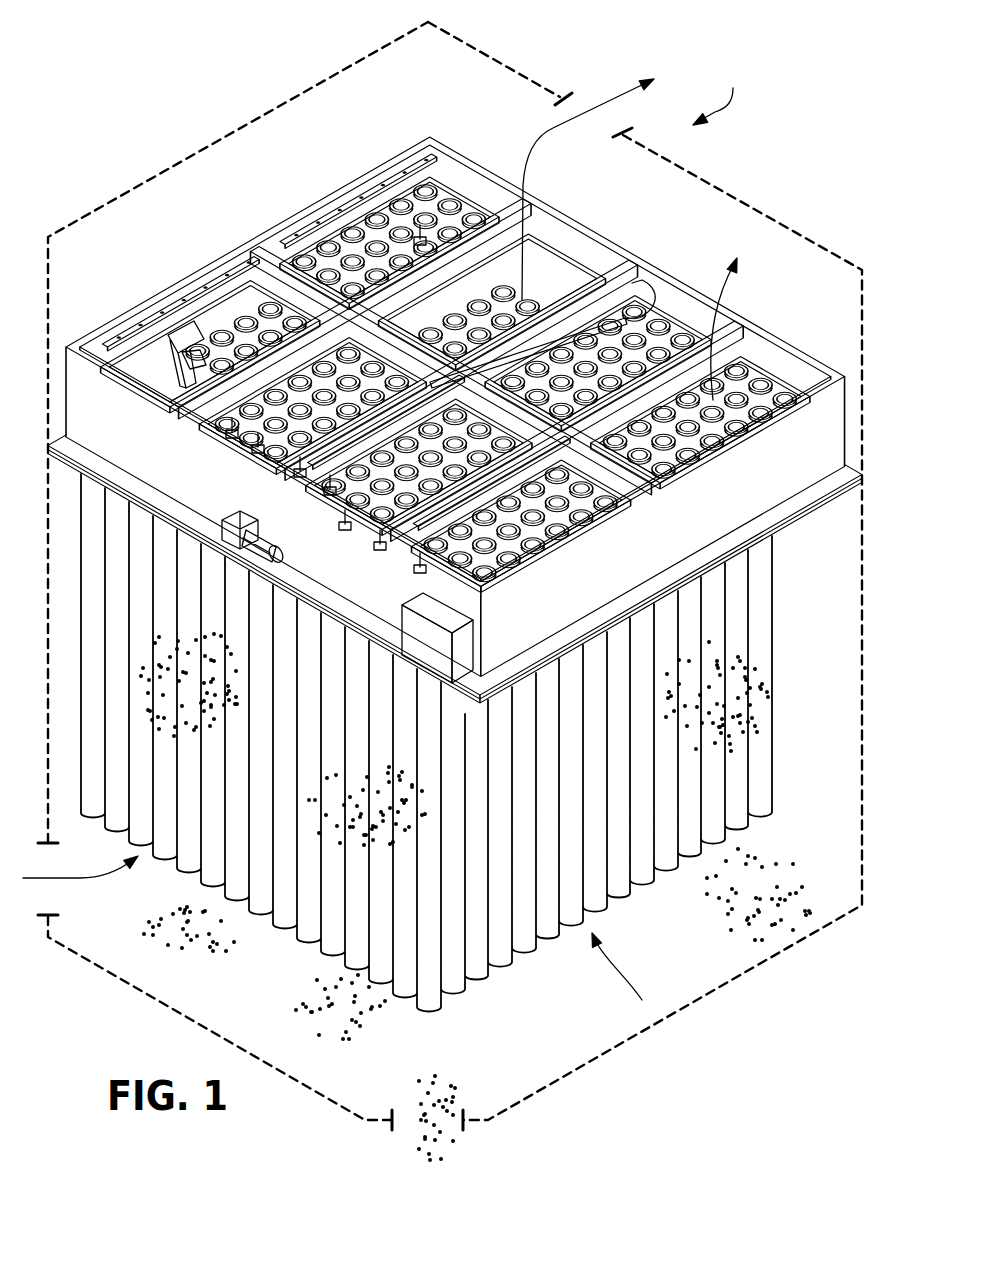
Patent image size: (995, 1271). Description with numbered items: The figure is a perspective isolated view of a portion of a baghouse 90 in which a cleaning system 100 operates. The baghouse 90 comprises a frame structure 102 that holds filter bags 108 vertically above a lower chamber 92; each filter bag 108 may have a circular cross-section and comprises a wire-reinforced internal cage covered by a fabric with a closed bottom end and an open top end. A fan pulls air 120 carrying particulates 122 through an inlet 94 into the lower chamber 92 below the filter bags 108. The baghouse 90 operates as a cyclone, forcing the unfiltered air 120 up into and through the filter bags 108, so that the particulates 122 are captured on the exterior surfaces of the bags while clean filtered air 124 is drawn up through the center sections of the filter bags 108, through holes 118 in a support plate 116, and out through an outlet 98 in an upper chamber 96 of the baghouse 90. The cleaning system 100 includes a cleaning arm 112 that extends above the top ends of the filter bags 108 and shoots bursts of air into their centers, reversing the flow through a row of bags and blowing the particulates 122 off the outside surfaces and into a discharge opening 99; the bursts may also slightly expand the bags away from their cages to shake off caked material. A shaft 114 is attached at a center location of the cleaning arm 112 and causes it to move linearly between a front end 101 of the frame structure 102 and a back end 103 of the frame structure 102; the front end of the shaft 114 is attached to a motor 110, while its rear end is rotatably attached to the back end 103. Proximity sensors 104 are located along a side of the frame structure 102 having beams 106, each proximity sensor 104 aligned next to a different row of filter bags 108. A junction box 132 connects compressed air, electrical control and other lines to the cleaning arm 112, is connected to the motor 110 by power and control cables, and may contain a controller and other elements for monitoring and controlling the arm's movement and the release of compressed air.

The baghouse 90 is at (238, 122).
The lower chamber 92 is at (548, 1055).
The inlet 94 is at (68, 910).
The upper chamber 96 is at (472, 78).
The outlet 98 is at (575, 96).
The discharge opening 99 is at (395, 1132).
The cleaning system 100 is at (721, 91).
The front end 101 is at (118, 425).
The frame structure 102 is at (314, 191).
The back end 103 is at (819, 362).
The proximity sensor 104 is at (230, 292).
The beam 106 is at (282, 256).
The filter bag 108 is at (773, 637).
The motor 110 is at (280, 532).
The cleaning arm 112 is at (170, 330).
The shaft 114 is at (655, 285).
The support plate 116 is at (382, 245).
The hole 118 is at (449, 237).
The air 120 is at (82, 878).
The particulates 122 is at (245, 685).
The clean filtered air 124 is at (533, 163).
The junction box 132 is at (474, 612).